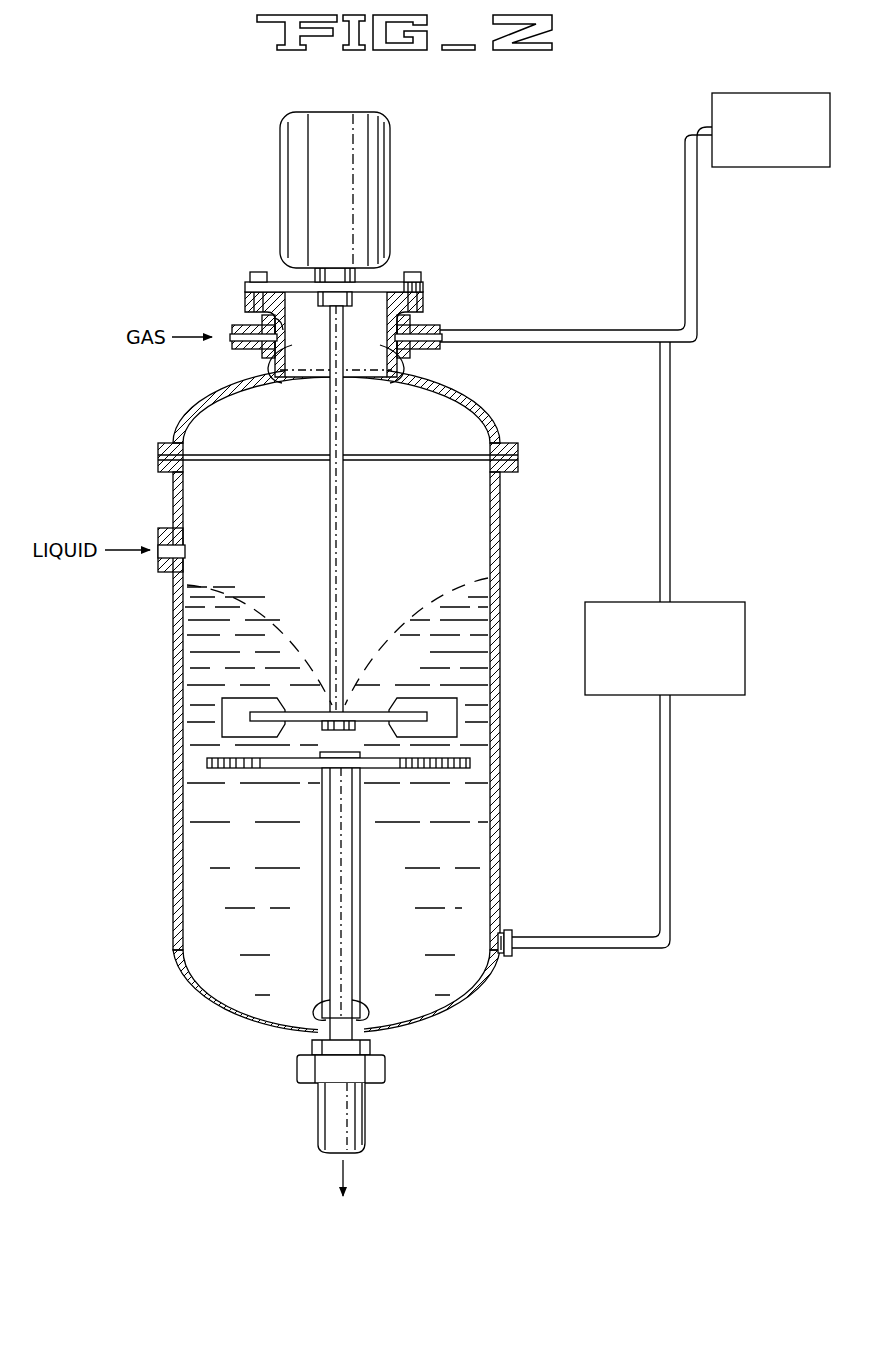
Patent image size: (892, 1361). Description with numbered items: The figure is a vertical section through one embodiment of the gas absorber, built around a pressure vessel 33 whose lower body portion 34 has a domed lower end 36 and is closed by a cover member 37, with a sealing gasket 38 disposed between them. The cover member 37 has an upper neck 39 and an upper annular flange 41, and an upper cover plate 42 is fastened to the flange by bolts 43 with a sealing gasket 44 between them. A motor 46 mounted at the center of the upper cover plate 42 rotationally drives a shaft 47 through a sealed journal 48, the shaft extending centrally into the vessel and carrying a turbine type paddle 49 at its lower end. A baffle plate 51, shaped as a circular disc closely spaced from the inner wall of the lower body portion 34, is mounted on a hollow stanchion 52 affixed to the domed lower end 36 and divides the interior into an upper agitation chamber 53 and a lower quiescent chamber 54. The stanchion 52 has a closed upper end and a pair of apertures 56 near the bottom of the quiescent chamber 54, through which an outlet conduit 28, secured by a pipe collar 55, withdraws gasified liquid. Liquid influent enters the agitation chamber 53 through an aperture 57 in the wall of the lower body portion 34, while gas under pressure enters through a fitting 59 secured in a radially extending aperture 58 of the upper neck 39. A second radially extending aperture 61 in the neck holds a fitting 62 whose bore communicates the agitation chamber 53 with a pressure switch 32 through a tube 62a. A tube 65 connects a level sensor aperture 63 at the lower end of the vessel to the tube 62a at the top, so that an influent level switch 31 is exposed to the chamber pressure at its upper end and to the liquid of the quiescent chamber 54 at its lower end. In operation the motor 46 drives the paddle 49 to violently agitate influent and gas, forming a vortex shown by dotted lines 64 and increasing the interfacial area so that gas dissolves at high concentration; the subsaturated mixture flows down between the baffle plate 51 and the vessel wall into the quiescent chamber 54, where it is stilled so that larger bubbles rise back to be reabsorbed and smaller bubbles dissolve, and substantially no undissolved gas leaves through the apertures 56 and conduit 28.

The outlet conduit 28 is at (366, 1122).
The influent level switch 31 is at (594, 608).
The pressure switch 32 is at (797, 160).
The pressure vessel 33 is at (160, 648).
The lower body portion 34 is at (176, 612).
The domed lower end 36 is at (268, 1040).
The cover member 37 is at (195, 409).
The sealing gasket 38 is at (160, 457).
The upper neck 39 is at (268, 312).
The upper annular flange 41 is at (428, 304).
The upper cover plate 42 is at (425, 284).
The bolts 43 is at (258, 276).
The sealing gasket 44 is at (252, 296).
The motor 46 is at (389, 155).
The shaft 47 is at (330, 425).
The sealed journal 48 is at (335, 276).
The turbine type paddle 49 is at (455, 728).
The baffle plate 51 is at (472, 764).
The stanchion 52 is at (360, 848).
The agitation chamber 53 is at (424, 553).
The quiescent chamber 54 is at (274, 858).
The pipe collar 55 is at (386, 1068).
The apertures 56 is at (345, 1002).
The aperture 57 is at (165, 556).
The radially extending aperture 58 is at (292, 375).
The fitting 59 is at (248, 350).
The second radially extending aperture 61 is at (374, 375).
The fitting 62 is at (428, 354).
The tube 62a is at (565, 334).
The level sensor aperture 63 is at (494, 944).
The vortex 64 is at (418, 618).
The tube 65 is at (672, 893).